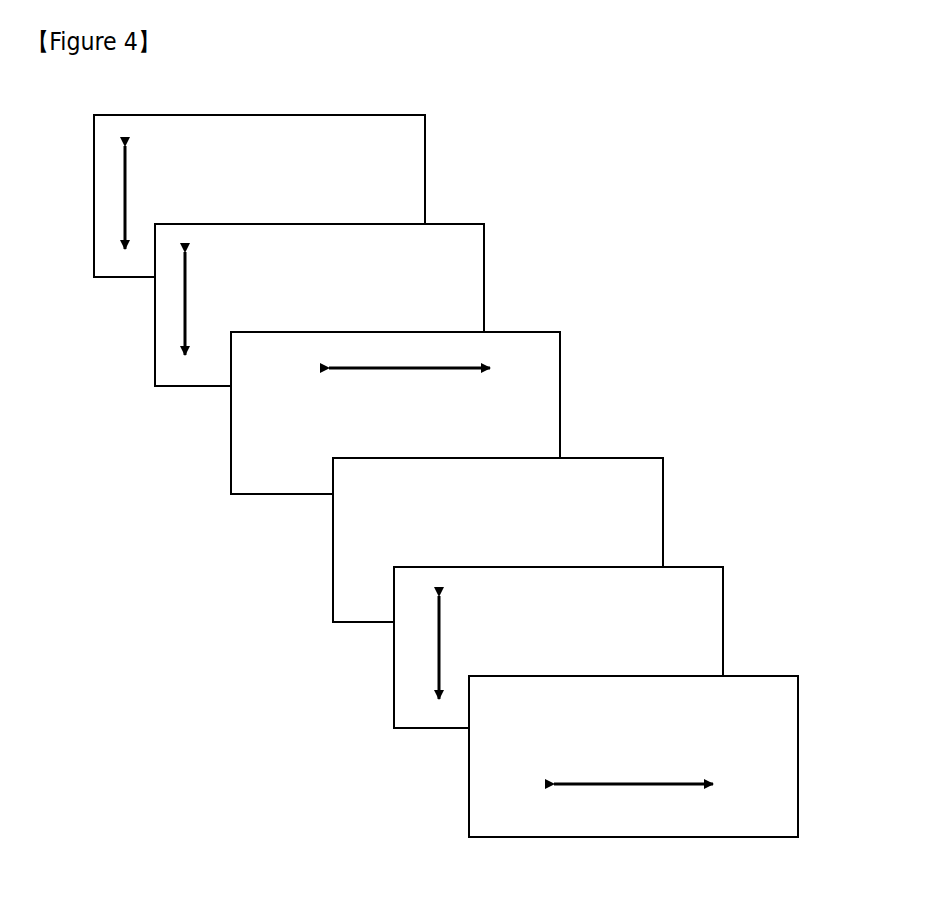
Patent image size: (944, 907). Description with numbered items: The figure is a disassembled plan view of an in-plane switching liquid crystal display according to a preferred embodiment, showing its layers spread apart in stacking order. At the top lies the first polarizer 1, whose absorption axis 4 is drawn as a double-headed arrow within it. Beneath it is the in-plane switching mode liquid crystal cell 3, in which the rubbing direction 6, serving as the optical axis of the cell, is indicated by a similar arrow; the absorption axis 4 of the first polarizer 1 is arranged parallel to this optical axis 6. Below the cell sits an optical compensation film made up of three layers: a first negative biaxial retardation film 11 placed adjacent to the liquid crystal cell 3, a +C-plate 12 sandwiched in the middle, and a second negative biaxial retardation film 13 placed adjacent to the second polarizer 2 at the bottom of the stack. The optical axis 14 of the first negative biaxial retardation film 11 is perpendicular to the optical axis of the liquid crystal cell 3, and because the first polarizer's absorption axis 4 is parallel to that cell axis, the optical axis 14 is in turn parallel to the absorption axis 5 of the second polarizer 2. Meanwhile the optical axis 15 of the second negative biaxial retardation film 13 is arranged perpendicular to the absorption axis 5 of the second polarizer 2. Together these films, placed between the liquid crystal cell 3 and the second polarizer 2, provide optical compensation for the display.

The first polarizer 1 is at (425, 164).
The second polarizer 2 is at (798, 748).
The in-plane switching (IPS) mode liquid crystal cell 3 is at (484, 262).
The absorption axis of the first polarizer 4 is at (125, 203).
The absorption axis of the second polarizer 5 is at (628, 784).
The rubbing direction 6 is at (185, 328).
The first negative (−) biaxial retardation film 11 is at (560, 392).
The +C-plate 12 is at (663, 512).
The second negative (−) biaxial retardation film 13 is at (723, 620).
The optical axis 14 is at (450, 368).
The optical axis 15 is at (439, 668).